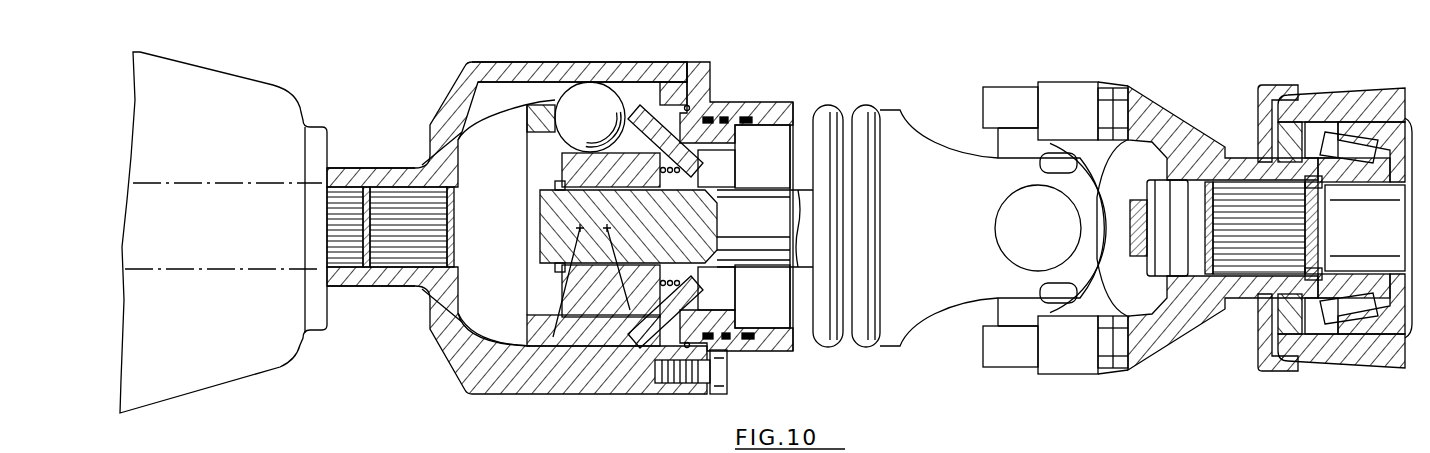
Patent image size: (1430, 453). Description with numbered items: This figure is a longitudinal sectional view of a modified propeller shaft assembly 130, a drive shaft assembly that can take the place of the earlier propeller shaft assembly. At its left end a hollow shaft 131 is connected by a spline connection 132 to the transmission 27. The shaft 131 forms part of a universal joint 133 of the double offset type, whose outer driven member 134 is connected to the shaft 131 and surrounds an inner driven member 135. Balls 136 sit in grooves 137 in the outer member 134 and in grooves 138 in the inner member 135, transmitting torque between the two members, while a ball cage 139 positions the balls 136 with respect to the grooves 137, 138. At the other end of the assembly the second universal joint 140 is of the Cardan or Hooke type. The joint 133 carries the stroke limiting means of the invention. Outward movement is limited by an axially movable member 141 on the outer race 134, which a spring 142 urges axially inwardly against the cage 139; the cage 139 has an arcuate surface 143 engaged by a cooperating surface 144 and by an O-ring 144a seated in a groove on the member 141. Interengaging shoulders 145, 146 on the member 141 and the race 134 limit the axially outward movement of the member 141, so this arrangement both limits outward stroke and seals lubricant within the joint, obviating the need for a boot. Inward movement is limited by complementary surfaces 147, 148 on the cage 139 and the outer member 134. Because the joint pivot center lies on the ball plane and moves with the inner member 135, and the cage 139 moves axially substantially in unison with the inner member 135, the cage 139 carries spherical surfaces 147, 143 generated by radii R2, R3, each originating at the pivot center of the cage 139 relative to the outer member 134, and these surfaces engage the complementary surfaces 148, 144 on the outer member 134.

The transmission 27 is at (226, 88).
The propeller shaft assembly 130 is at (864, 82).
The hollow shaft 131 is at (373, 178).
The spline connection 132 is at (335, 188).
The universal joint 133 is at (612, 58).
The outer driven member 134 is at (544, 63).
The inner driven member 135 is at (563, 170).
The balls 136 is at (580, 113).
The grooves 137 is at (662, 88).
The grooves 138 is at (553, 149).
The ball cage 139 is at (698, 96).
The universal joint 140 is at (1085, 77).
The axially movable member 141 is at (728, 131).
The spring 142 is at (792, 103).
The arcuate surface 143 is at (730, 160).
The cooperating surface 144 is at (683, 313).
The O-ring 144a is at (690, 322).
The shoulder 145 is at (736, 116).
The shoulder 146 is at (750, 119).
The complementary surface 147 is at (490, 390).
The complementary surface 148 is at (457, 350).
The radius R2 is at (591, 282).
The radius R3 is at (582, 212).